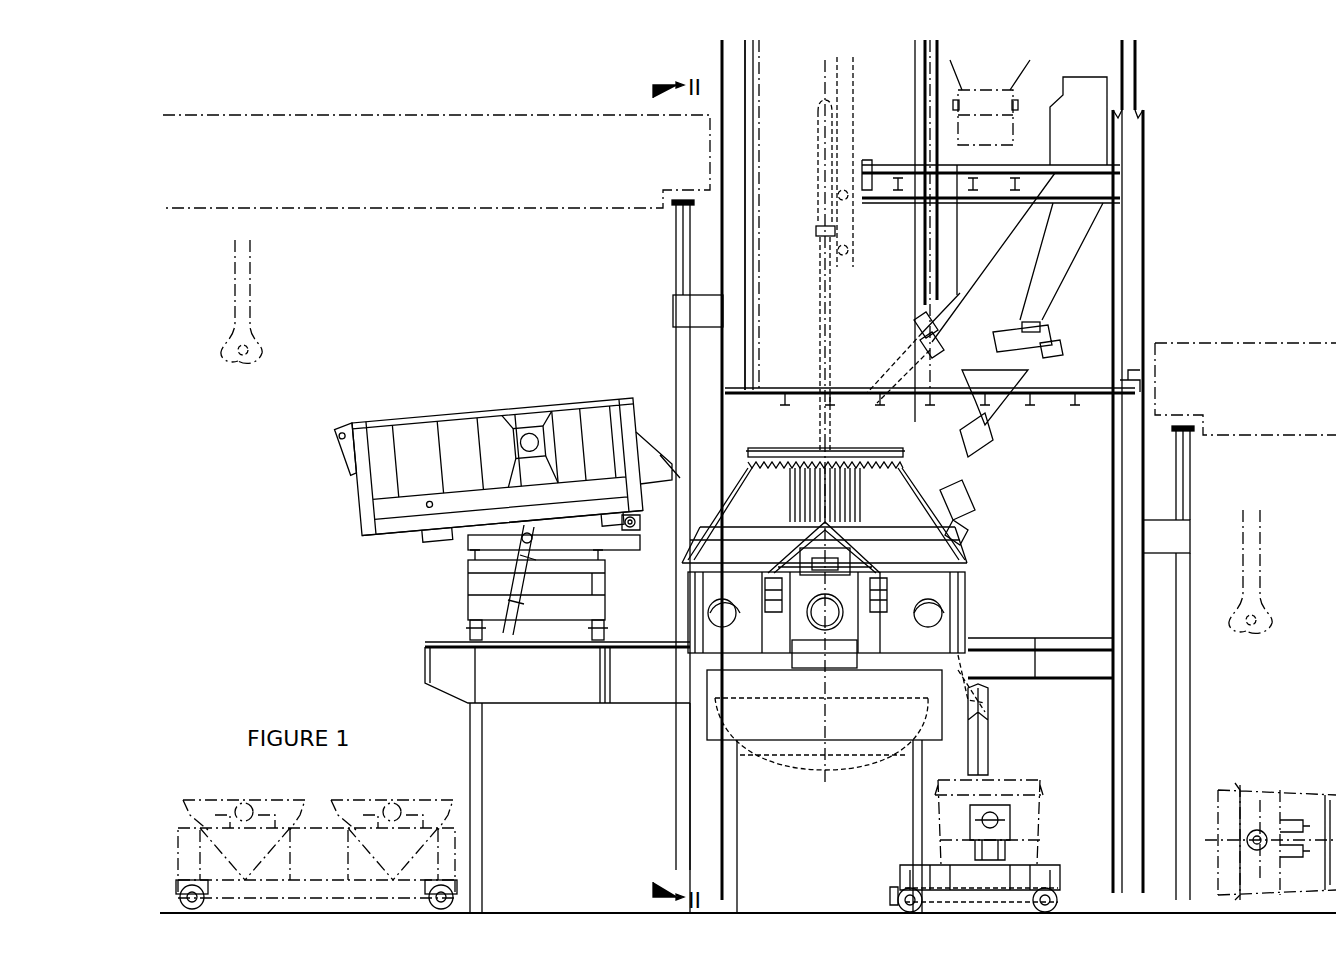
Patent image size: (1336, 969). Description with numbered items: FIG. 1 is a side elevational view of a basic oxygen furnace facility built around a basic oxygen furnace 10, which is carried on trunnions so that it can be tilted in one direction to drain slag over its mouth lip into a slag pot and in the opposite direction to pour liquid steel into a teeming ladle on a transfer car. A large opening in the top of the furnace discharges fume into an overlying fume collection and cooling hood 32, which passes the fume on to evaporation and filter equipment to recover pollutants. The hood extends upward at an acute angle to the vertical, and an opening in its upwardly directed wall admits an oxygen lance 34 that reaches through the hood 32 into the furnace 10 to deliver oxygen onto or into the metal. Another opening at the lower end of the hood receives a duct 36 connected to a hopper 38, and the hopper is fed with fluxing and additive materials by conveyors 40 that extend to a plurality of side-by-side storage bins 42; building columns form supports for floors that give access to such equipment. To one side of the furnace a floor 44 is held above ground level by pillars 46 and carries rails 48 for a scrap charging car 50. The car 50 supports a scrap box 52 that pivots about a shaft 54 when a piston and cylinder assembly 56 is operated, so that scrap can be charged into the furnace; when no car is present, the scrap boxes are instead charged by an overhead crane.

The basic oxygen furnace 10 is at (958, 532).
The fume collection and cooling hood 32 is at (804, 334).
The oxygen lance 34 is at (822, 220).
The duct 36 is at (948, 312).
The hopper 38 is at (998, 236).
The conveyors 40 is at (963, 130).
The storage bins 42 is at (1001, 87).
The floor 44 is at (552, 698).
The pillars 46 is at (474, 790).
The rails 48 is at (600, 642).
The scrap charging car 50 is at (455, 606).
The scrap box 52 is at (468, 417).
The shaft 54 is at (634, 524).
The piston and cylinder assembly 56 is at (512, 582).